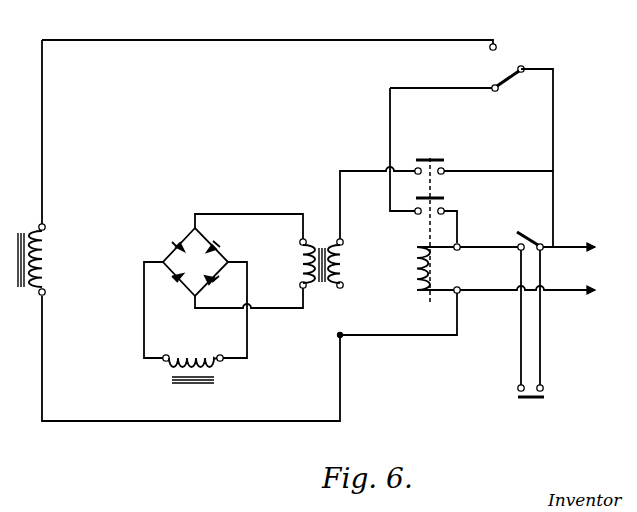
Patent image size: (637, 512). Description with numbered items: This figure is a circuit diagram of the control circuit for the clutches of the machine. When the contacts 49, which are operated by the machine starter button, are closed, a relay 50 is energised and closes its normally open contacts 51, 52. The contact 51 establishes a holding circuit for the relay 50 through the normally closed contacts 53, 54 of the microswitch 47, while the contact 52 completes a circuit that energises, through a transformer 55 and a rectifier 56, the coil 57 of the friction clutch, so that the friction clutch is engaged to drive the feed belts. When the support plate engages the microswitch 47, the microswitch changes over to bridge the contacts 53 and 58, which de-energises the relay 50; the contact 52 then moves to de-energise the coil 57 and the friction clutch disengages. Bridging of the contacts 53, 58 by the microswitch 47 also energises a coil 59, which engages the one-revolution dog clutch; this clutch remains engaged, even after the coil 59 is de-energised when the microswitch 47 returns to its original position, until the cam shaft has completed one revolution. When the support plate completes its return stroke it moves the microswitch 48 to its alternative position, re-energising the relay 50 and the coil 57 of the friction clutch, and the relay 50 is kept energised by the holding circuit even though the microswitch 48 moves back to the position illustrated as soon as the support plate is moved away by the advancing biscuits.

The microswitch 47 is at (506, 77).
The microswitch 48 is at (521, 233).
The contacts 49 is at (532, 400).
The relay 50 is at (417, 268).
The contact 51 is at (442, 200).
The contact 52 is at (437, 166).
The contact 53 is at (523, 66).
The contact 54 is at (495, 92).
The transformer 55 is at (321, 245).
The rectifier 56 is at (190, 236).
The coil 57 is at (194, 355).
The contact 58 is at (497, 45).
The coil 59 is at (48, 252).